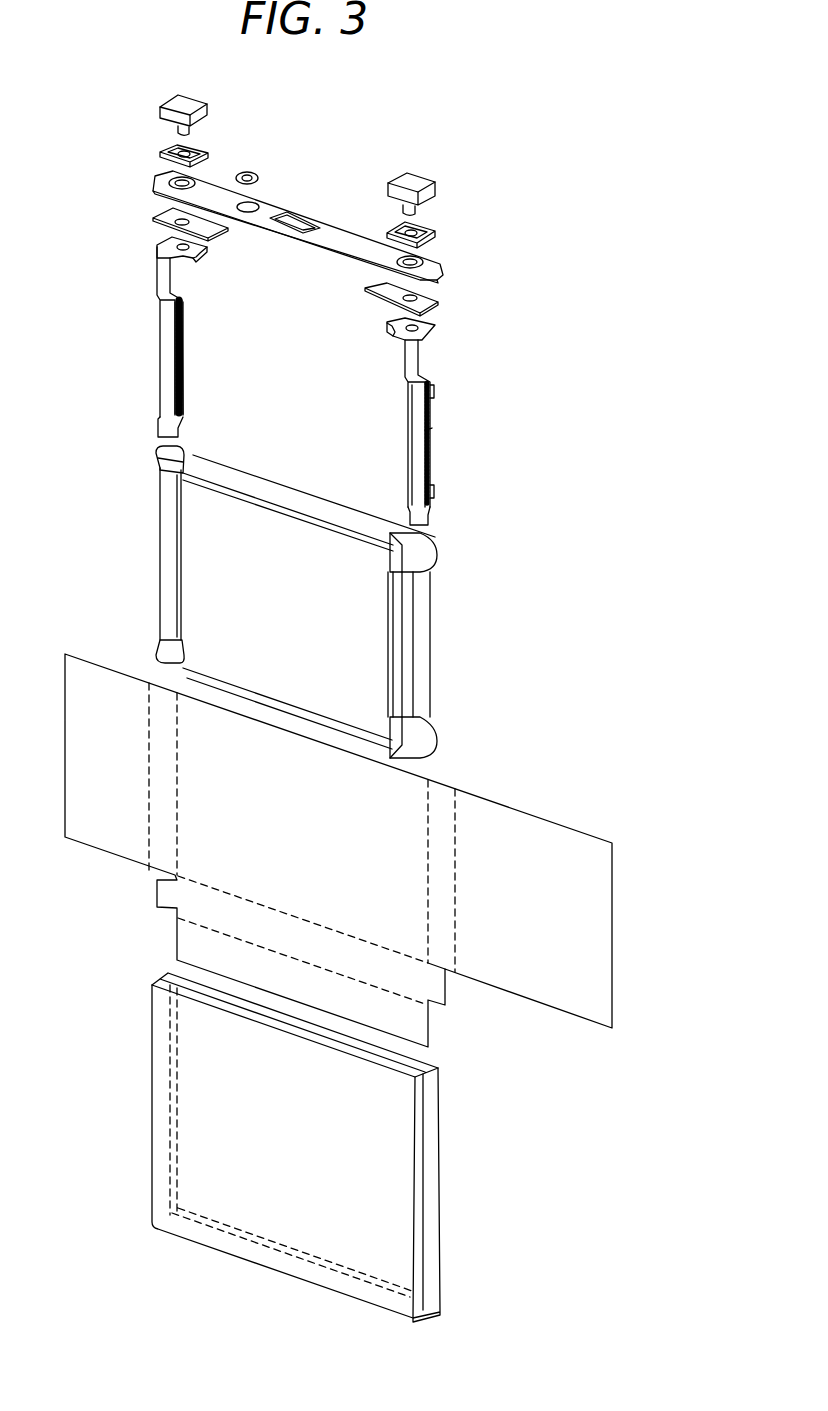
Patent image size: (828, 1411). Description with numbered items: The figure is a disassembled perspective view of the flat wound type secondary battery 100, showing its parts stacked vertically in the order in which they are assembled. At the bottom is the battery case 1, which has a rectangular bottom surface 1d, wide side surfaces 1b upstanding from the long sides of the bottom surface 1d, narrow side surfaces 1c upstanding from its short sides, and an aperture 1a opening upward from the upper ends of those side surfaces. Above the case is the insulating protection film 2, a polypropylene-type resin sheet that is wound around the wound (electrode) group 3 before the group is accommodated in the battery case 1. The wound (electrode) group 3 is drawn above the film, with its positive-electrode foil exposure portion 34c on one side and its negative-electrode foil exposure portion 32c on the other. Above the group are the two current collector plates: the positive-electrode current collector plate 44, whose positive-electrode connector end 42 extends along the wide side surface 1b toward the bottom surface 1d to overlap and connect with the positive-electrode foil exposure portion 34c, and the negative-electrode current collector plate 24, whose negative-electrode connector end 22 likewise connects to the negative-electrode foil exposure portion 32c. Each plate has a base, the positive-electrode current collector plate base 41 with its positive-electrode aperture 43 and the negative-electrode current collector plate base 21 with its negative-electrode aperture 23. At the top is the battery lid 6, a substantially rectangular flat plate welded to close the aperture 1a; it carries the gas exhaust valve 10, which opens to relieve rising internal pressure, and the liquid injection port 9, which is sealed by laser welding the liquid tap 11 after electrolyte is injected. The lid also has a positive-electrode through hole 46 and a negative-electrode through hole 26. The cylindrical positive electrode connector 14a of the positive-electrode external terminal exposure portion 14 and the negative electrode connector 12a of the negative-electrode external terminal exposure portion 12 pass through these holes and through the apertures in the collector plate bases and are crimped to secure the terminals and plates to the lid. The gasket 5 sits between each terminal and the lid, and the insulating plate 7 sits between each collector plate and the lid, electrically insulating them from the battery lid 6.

The secondary battery 100 is at (563, 212).
The battery case 1 is at (299, 1136).
The aperture 1a is at (152, 982).
The wide side surfaces 1b is at (190, 1110).
The narrow side surfaces 1c is at (428, 1245).
The bottom surface 1d is at (262, 1258).
The insulating protection film 2 is at (592, 935).
The wound (electrode) group 3 is at (297, 602).
The negative-electrode foil exposure portion 32c is at (430, 678).
The positive-electrode foil exposure portion 34c is at (167, 555).
The gasket 5 is at (162, 155).
The battery lid 6 is at (294, 214).
The insulating plate 7 is at (154, 222).
The liquid injection port 9 is at (258, 203).
The gas exhaust valve 10 is at (300, 220).
The liquid tap 11 is at (247, 172).
The negative-electrode external terminal exposure portion 12 is at (452, 198).
The negative electrode connector 12a is at (416, 212).
The positive-electrode external terminal exposure portion 14 is at (144, 116).
The positive electrode connector 14a is at (176, 130).
The negative-electrode current collector plate base 21 is at (412, 417).
The negative-electrode connector end 22 is at (430, 483).
The negative-electrode aperture 23 is at (388, 330).
The negative-electrode current collector plate 24 is at (430, 438).
The negative-electrode through hole 26 is at (424, 265).
The positive-electrode current collector plate base 41 is at (172, 336).
The positive-electrode connector end 42 is at (167, 393).
The positive-electrode aperture 43 is at (200, 259).
The positive-electrode current collector plate 44 is at (167, 352).
The positive-electrode through hole 46 is at (168, 182).